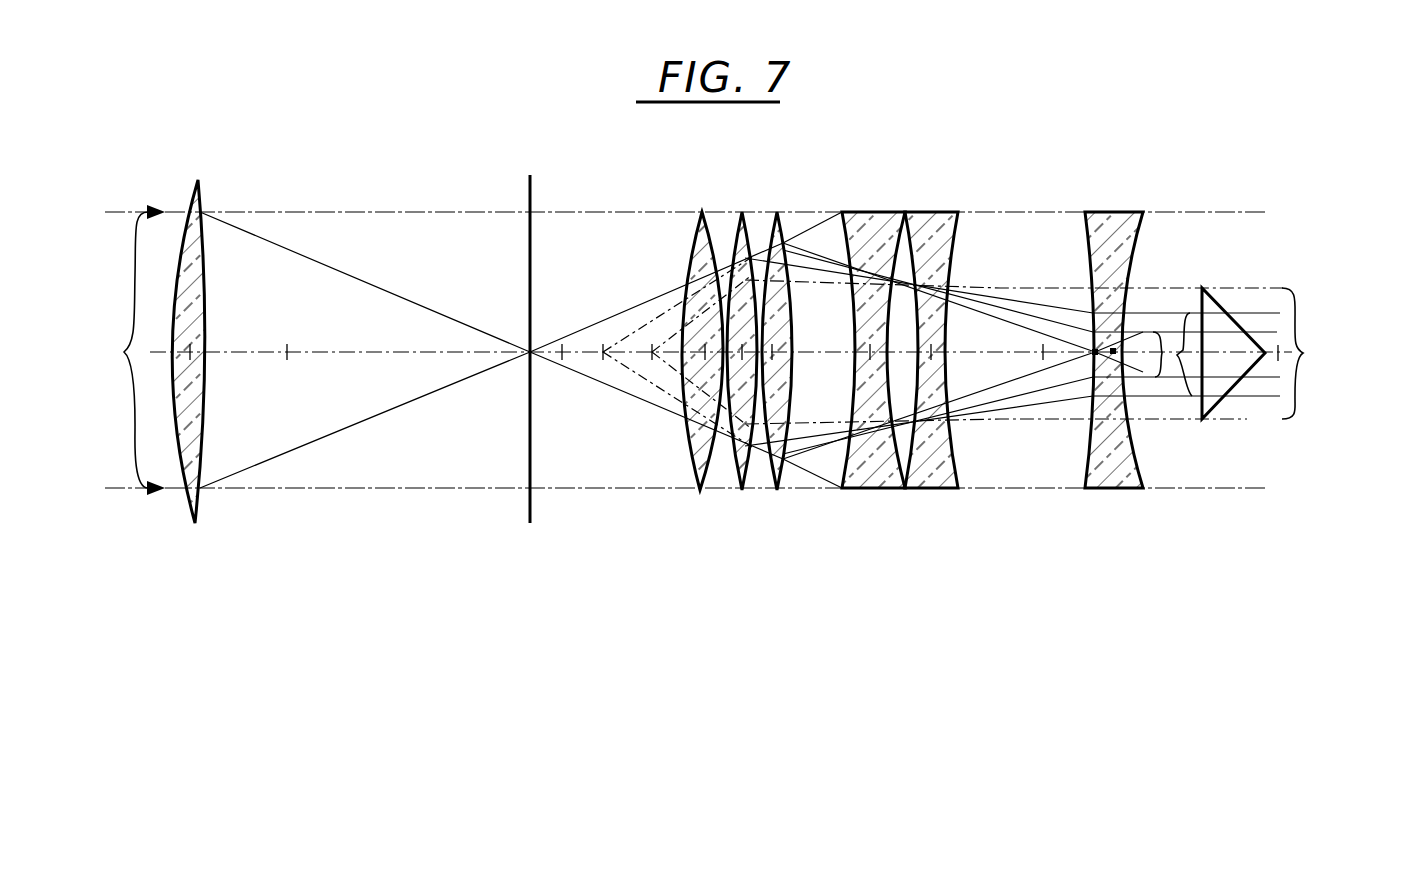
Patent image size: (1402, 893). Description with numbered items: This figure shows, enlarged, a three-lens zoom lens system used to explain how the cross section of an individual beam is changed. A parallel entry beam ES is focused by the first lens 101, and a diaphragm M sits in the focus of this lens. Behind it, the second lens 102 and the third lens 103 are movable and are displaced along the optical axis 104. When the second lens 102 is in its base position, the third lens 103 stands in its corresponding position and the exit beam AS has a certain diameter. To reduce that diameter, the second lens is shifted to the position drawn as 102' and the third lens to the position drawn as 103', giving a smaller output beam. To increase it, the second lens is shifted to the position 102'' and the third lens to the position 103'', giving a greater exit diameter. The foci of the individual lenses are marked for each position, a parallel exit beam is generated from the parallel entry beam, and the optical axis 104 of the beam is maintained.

The first lens 101 is at (195, 523).
The second lens 102 is at (752, 395).
The second lens in position P2' 102' is at (706, 395).
The second lens in position P2" 102'' is at (799, 395).
The third lens 103 is at (938, 395).
The third lens in position P3' 103' is at (1114, 395).
The third lens in position P3" 103'' is at (874, 395).
The optical axis 104 is at (287, 352).